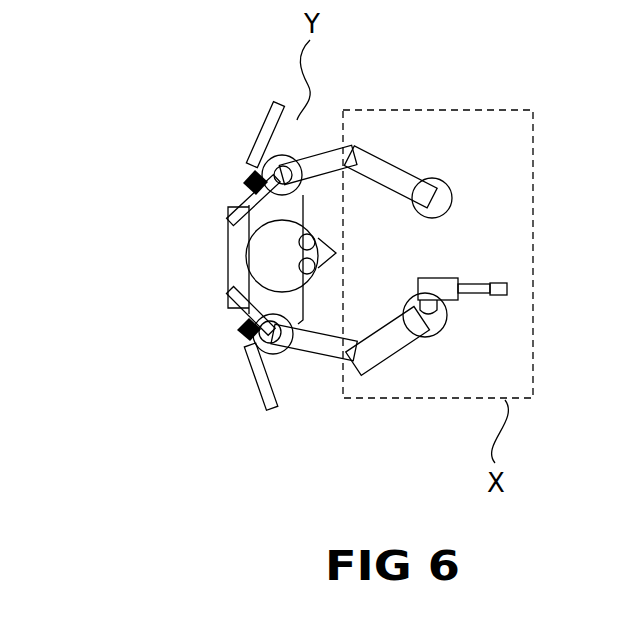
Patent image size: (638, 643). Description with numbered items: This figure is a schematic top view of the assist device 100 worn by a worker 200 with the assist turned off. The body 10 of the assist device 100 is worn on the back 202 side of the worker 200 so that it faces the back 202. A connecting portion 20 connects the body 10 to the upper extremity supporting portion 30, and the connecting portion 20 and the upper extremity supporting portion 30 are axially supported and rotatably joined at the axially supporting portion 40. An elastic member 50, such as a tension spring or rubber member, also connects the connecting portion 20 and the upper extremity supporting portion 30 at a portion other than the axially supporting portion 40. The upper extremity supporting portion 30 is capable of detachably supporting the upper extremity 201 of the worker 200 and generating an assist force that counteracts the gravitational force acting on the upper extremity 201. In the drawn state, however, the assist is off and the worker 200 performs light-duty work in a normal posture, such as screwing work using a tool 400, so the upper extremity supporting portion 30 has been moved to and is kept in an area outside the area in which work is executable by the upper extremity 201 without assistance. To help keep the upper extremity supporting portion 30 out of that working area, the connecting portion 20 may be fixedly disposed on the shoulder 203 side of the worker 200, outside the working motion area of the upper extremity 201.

The body 10 is at (228, 270).
The connecting portion 20 is at (242, 203).
The upper extremity supporting portion 30 is at (256, 110).
The axially supporting portion 40 is at (298, 162).
The elastic member 50 is at (240, 185).
The assist device 100 is at (212, 311).
The worker 200 is at (322, 322).
The upper extremity 201 is at (338, 155).
The back 202 is at (227, 235).
The shoulder 203 is at (255, 347).
The tool 400 is at (443, 280).